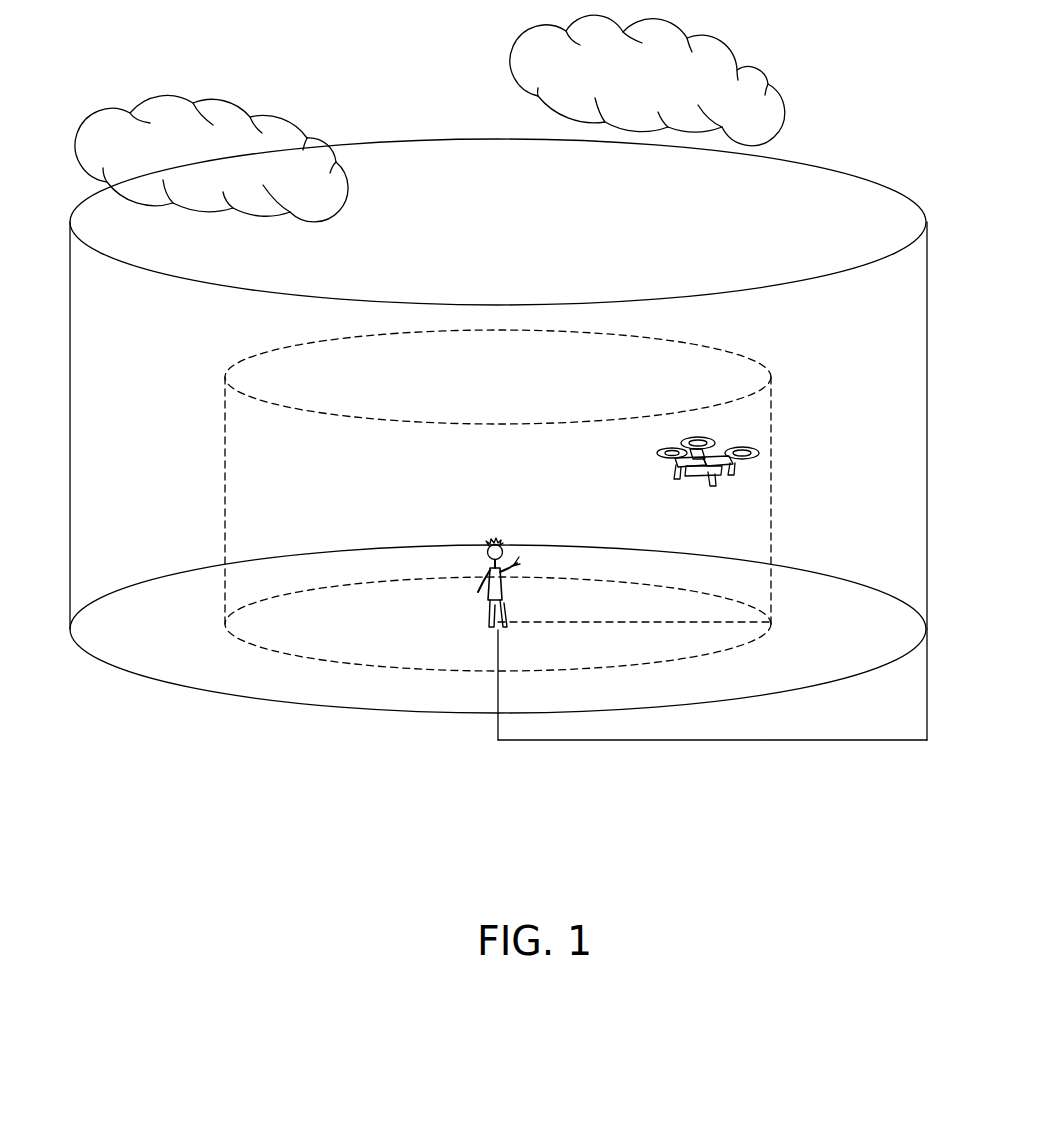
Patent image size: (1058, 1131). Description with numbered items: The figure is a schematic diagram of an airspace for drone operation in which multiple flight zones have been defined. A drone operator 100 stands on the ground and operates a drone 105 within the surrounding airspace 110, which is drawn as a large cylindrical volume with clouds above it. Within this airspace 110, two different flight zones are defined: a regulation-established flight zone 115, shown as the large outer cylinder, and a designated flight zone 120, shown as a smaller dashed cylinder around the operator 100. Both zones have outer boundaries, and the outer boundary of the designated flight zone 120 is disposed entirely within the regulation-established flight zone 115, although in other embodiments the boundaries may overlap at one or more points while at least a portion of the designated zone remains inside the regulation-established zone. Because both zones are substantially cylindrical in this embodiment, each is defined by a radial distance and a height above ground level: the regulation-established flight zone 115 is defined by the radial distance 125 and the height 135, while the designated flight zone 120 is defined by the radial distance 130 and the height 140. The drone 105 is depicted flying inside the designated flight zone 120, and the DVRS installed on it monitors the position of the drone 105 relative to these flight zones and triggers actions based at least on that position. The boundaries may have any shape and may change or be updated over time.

The drone operator 100 is at (483, 602).
The drone 105 is at (662, 456).
The airspace 110 is at (268, 31).
The regulation-established flight zone 115 is at (132, 316).
The designated flight zone 120 is at (274, 449).
The radial distance 125 is at (862, 726).
The radial distance 130 is at (565, 622).
The height 135 is at (927, 513).
The height 140 is at (772, 417).